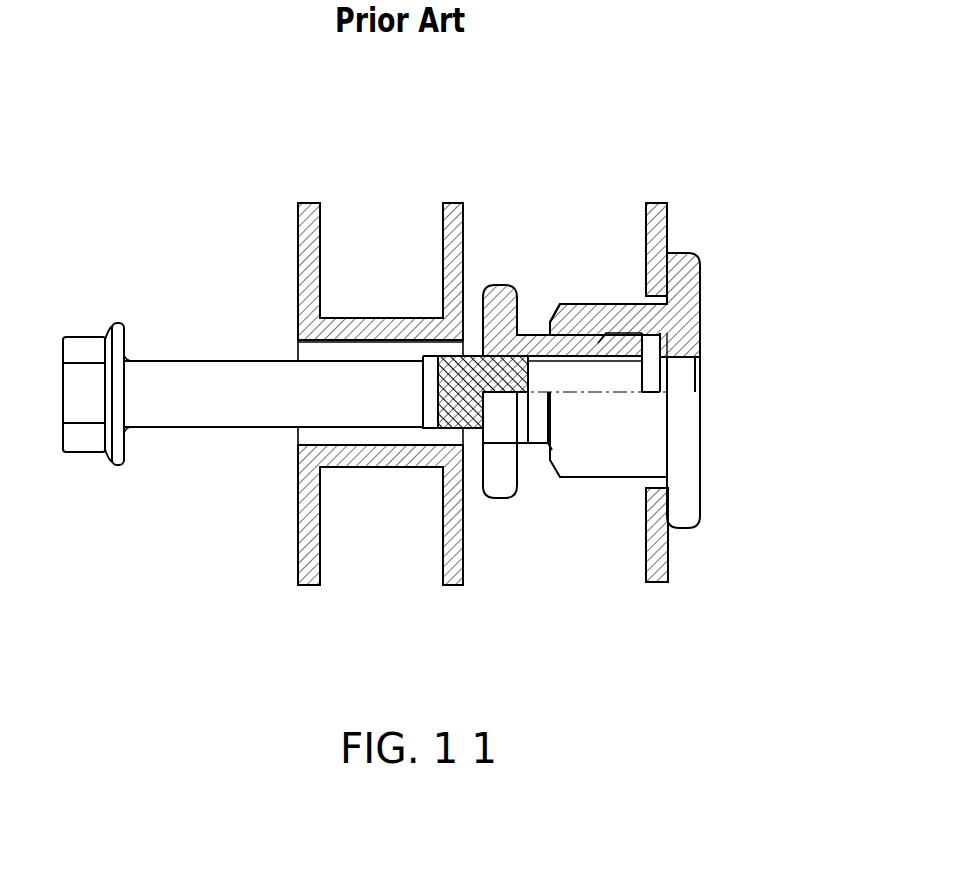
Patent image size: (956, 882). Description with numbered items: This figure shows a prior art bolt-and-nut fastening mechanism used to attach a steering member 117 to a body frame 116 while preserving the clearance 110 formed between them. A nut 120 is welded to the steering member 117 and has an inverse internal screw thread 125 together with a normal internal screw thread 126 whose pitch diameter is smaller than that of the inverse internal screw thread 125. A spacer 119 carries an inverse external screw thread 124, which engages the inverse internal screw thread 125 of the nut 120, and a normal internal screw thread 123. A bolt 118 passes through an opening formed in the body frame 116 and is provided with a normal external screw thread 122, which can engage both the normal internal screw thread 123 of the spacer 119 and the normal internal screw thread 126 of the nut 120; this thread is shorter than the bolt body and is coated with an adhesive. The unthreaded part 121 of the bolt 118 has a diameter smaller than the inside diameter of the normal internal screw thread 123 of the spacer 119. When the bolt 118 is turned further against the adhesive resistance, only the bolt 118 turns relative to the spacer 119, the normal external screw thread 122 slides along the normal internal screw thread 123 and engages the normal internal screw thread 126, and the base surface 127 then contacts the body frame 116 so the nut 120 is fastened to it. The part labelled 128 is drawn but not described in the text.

The clearance 110 is at (585, 272).
The body frame 116 is at (445, 545).
The steering member 117 is at (665, 547).
The bolt 118 is at (87, 377).
The spacer 119 is at (507, 477).
The nut 120 is at (683, 482).
The unthreaded part 121 is at (205, 360).
The normal external screw thread 122 is at (458, 360).
The normal internal screw thread 123 is at (610, 357).
The inverse external screw thread 124 is at (547, 332).
The inverse internal screw thread 125 is at (655, 333).
The normal internal screw thread 126 is at (680, 360).
The base surface 127 is at (125, 443).
The collar 128 is at (476, 478).